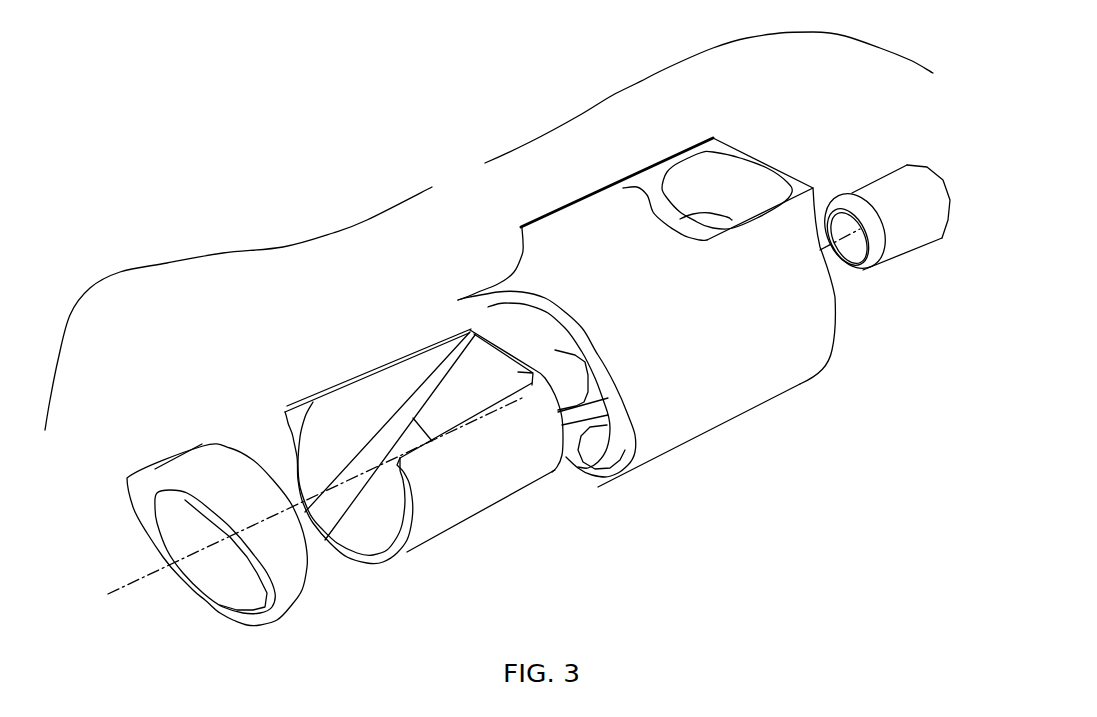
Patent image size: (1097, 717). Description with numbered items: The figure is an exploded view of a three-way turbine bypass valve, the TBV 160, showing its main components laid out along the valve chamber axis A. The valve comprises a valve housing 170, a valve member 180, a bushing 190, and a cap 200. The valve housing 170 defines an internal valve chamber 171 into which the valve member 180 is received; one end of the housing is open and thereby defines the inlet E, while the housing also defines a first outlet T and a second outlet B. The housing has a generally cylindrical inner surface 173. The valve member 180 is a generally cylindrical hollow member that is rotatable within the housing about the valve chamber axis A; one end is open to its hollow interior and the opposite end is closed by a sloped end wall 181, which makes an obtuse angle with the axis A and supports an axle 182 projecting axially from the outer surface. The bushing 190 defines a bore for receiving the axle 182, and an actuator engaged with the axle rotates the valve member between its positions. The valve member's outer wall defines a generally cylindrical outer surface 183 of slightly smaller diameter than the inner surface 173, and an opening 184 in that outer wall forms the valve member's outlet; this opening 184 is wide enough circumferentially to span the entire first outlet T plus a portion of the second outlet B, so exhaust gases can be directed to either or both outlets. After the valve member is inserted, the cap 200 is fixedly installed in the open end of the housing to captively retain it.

The TBV 160 is at (485, 163).
The valve housing 170 is at (727, 413).
The internal valve chamber 171 is at (585, 466).
The generally cylindrical inner surface 173 is at (542, 346).
The valve member 180 is at (483, 505).
The sloped end wall 181 is at (478, 392).
The axle 182 is at (558, 367).
The generally cylindrical outer surface 183 is at (519, 466).
The opening 184 is at (413, 418).
The bushing 190 is at (907, 240).
The cap 200 is at (287, 600).
The valve chamber axis A is at (140, 582).
The second outlet B is at (623, 188).
The inlet E is at (492, 320).
The first outlet T is at (727, 198).